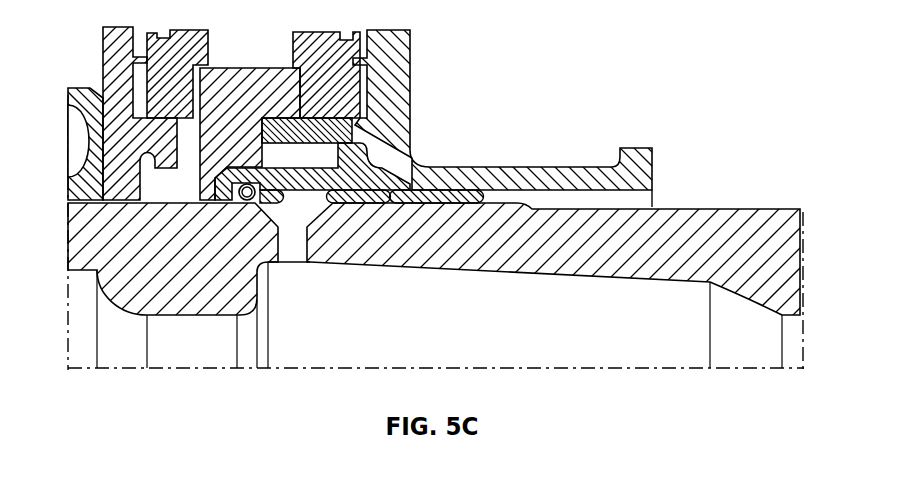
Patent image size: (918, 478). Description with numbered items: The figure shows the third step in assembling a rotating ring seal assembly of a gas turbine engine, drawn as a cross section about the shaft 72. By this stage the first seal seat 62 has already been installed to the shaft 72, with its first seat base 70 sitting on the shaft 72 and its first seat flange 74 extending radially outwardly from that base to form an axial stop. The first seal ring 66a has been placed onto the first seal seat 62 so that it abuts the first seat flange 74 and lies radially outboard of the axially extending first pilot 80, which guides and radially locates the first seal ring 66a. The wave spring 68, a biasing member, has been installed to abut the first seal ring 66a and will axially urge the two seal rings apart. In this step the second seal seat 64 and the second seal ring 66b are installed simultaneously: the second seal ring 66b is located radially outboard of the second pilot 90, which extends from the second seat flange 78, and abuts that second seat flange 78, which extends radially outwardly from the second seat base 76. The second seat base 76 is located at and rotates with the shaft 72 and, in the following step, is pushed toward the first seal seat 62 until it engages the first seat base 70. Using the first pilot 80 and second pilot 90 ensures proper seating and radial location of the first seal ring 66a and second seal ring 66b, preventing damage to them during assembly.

The first seal seat 62 is at (113, 142).
The second seal seat 64 is at (500, 178).
The first seal ring 66a is at (186, 107).
The second seal ring 66b is at (356, 107).
The wave spring 68 is at (262, 107).
The first seat base 70 is at (120, 171).
The shaft 72 is at (202, 283).
The first seat flange 74 is at (117, 63).
The second seat base 76 is at (368, 158).
The second seat flange 78 is at (398, 47).
The first pilot 80 is at (152, 140).
The second pilot 90 is at (300, 137).